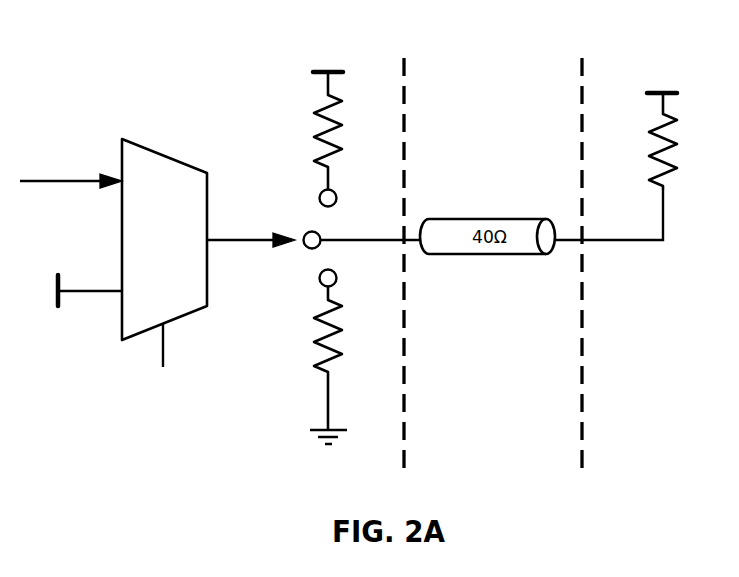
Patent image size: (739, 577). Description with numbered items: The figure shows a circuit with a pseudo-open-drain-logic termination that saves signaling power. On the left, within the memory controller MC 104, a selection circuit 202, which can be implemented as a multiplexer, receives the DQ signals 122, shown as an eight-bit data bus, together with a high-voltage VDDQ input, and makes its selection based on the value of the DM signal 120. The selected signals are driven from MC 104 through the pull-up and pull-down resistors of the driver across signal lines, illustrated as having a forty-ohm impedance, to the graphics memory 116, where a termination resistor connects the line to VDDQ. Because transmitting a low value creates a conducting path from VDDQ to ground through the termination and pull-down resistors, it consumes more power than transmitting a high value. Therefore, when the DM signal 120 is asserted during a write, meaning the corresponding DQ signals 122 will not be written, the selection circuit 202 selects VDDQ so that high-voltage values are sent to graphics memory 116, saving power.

The DQ signals 122 is at (71, 161).
The selection circuit 202 is at (180, 250).
The DM signal 120 is at (161, 371).
The MC 104 is at (220, 261).
The graphics memory 116 is at (621, 266).